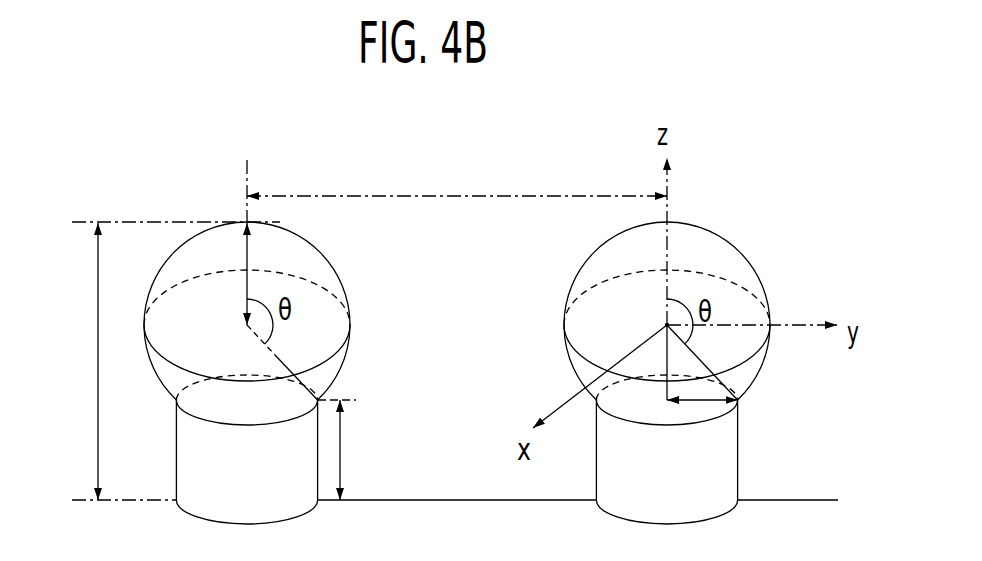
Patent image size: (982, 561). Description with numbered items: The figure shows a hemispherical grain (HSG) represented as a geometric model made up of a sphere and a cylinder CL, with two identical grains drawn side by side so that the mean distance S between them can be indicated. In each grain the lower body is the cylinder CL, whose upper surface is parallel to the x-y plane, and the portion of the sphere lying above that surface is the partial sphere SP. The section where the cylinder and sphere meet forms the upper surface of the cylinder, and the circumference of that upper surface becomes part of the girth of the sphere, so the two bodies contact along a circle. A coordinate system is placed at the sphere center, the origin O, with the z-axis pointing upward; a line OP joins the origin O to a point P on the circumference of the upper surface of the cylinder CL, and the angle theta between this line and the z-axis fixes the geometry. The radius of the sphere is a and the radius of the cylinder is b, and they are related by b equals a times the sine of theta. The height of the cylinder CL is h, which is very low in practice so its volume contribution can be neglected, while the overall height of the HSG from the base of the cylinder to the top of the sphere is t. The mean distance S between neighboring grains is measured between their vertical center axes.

The partial sphere SP is at (328, 258).
The cylinder CL is at (738, 470).
The point P is at (712, 378).
The origin O is at (655, 314).
The radius of sphere a is at (236, 274).
The radius of cylinder b is at (693, 406).
The height of the cylinder h is at (349, 450).
The height of HSG t is at (83, 361).
The mean distance between HSG S is at (457, 178).